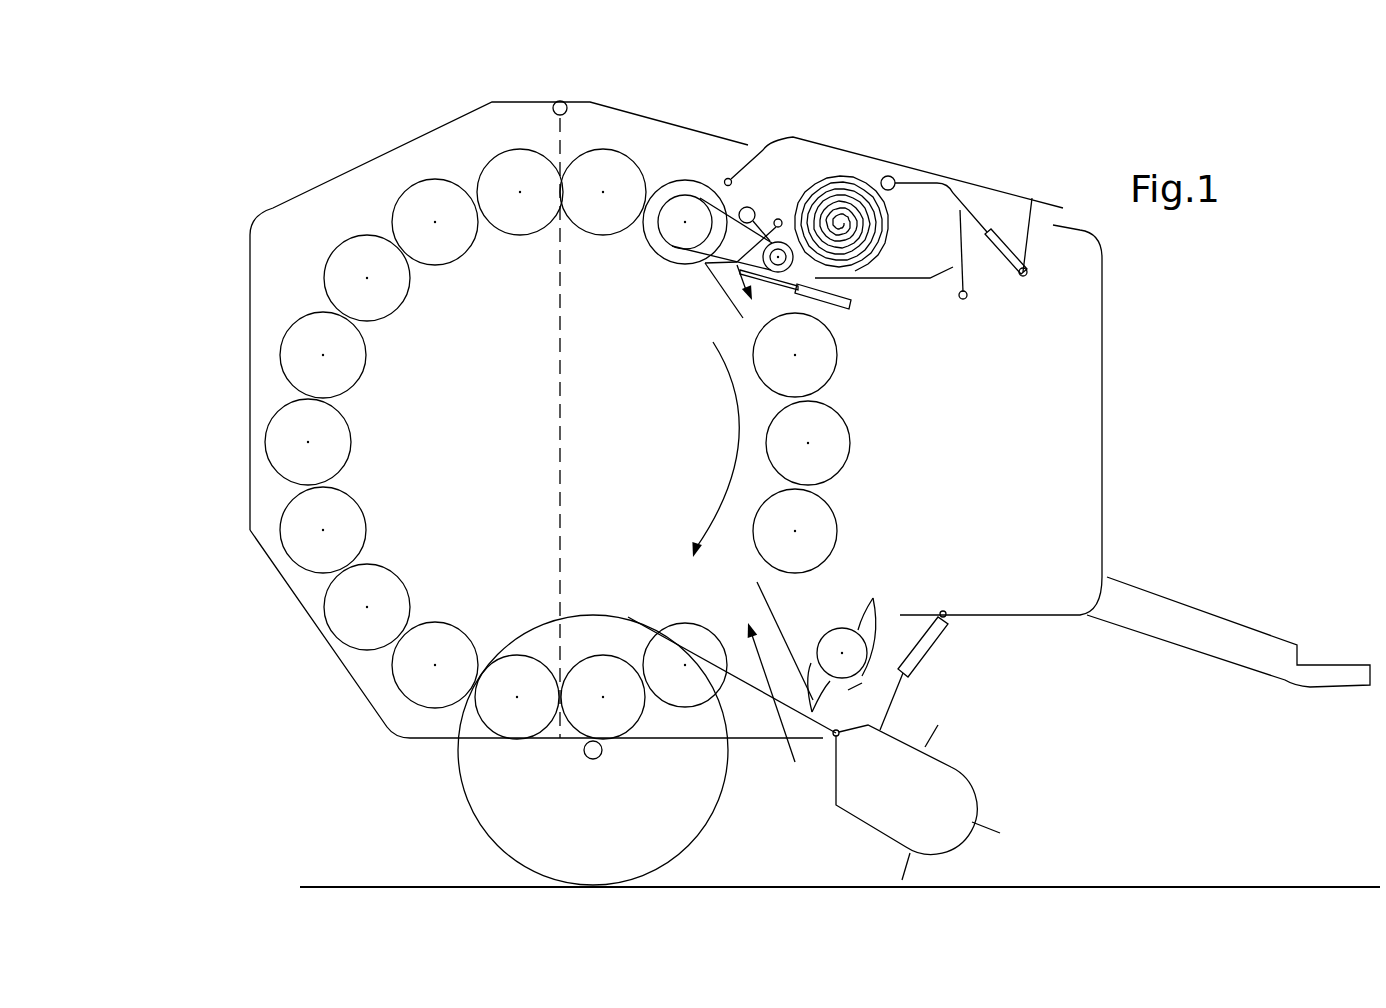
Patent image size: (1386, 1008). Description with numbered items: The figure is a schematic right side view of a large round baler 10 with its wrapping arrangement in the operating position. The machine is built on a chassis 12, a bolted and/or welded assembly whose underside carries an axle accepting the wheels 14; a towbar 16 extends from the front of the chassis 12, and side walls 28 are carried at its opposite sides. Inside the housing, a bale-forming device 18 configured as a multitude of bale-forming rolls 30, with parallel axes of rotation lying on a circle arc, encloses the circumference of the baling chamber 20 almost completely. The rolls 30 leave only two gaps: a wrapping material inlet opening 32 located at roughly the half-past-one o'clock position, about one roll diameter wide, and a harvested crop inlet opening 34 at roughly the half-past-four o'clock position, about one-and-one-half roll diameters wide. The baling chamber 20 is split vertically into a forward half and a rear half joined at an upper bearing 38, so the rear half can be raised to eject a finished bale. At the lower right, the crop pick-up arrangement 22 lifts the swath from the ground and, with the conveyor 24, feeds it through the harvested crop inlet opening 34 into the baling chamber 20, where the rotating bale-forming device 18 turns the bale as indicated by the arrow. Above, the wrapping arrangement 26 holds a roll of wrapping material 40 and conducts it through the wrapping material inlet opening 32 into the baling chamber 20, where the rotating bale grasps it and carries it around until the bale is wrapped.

The large round baler 10 is at (205, 300).
The chassis 12 is at (248, 444).
The wheels 14 is at (470, 822).
The towbar 16 is at (1263, 630).
The bale-forming device 18 is at (370, 498).
The baling chamber 20 is at (510, 432).
The crop pick-up arrangement 22 is at (970, 783).
The conveyor 24 is at (840, 626).
The wrapping arrangement 26 is at (973, 145).
The side walls 28 is at (962, 468).
The bale-forming rolls 30 is at (838, 352).
The wrapping material inlet opening 32 is at (697, 319).
The harvested crop inlet opening 34 is at (784, 713).
The upper bearing 38 is at (568, 110).
The wrapping material 40 is at (823, 171).